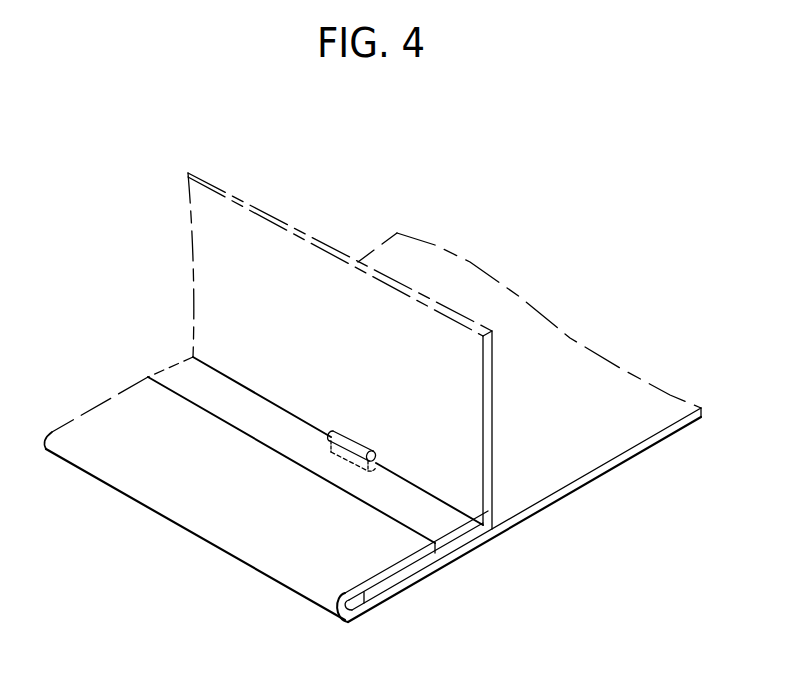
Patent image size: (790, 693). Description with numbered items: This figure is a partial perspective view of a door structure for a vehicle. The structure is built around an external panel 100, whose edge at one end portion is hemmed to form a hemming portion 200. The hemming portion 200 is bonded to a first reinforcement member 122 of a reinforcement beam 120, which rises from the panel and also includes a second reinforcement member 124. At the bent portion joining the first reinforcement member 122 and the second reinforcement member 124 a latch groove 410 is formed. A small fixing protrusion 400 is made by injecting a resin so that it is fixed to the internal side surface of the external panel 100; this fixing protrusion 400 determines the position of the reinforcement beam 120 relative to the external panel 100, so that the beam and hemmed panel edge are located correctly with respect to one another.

The external panel 100 is at (550, 460).
The reinforcement beam 120 is at (407, 404).
The first reinforcement member 122 is at (450, 532).
The second reinforcement member 124 is at (488, 480).
The hemming portion 200 is at (363, 553).
The fixing protrusion 400 is at (347, 447).
The latch groove 410 is at (350, 462).